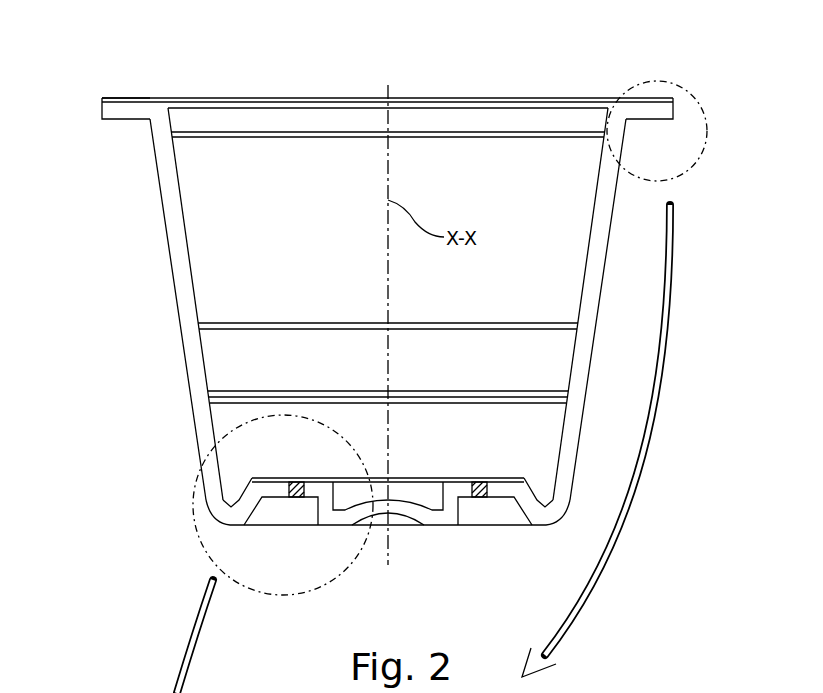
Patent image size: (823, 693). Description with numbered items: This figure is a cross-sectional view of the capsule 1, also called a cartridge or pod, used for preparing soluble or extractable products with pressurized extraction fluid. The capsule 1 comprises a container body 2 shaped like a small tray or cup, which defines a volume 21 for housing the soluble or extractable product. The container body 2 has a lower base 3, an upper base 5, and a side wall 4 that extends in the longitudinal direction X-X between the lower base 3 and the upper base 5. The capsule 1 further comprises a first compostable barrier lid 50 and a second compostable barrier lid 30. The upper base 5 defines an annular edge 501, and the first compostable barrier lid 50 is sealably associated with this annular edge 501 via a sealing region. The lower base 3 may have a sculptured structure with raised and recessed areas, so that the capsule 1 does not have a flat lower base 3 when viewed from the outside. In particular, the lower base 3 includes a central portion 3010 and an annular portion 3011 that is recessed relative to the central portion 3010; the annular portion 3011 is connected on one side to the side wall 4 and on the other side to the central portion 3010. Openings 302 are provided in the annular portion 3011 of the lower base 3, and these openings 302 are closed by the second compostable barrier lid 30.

The capsule 1 is at (708, 78).
The container body 2 is at (378, 377).
The lower base 3 is at (348, 567).
The side wall 4 is at (152, 253).
The upper base 5 is at (148, 122).
The volume 21 is at (312, 266).
The second compostable barrier lid 30 is at (499, 475).
The first compostable barrier lid 50 is at (272, 94).
The annular edge 501 is at (100, 121).
The openings 302 is at (299, 500).
The central portion 3010 is at (393, 533).
The annular portion 3011 is at (273, 512).